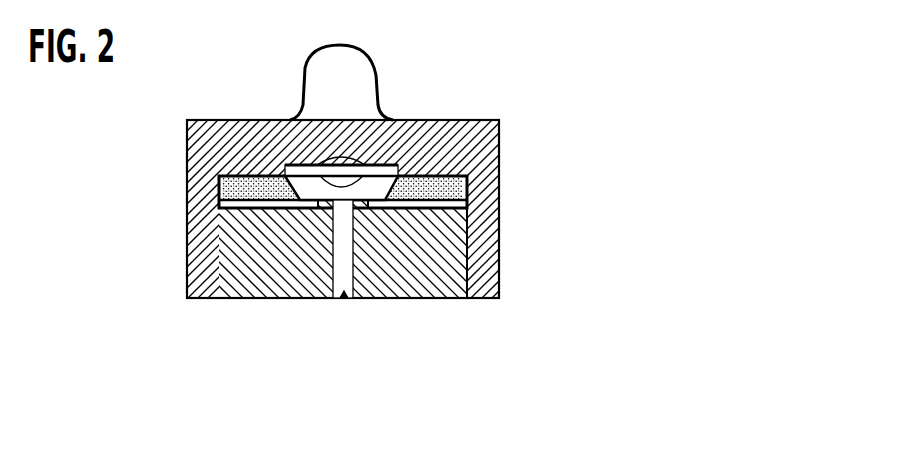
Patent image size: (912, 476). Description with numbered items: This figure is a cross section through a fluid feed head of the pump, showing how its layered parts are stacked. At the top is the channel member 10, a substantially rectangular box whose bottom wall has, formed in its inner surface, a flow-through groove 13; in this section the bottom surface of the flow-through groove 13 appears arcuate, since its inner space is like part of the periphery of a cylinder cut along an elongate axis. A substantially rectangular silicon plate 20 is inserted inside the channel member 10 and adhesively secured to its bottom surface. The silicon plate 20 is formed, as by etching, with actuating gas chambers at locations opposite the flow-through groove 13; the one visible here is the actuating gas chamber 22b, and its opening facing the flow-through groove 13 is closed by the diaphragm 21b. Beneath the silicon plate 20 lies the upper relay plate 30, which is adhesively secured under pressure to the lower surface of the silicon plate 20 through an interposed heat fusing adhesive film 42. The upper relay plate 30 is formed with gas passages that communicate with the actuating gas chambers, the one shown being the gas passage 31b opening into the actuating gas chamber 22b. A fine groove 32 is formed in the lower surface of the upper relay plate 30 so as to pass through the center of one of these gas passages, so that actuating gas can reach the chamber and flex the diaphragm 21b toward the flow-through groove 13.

The channel member 10 is at (215, 90).
The flow-through groove 13 is at (320, 163).
The silicon plate 20 is at (478, 180).
The diaphragm 21b is at (350, 160).
The actuating gas chamber 22b is at (348, 186).
The upper relay plate 30 is at (443, 283).
The gas passage 31b is at (343, 250).
The fine groove 32 is at (345, 298).
The heat fusing adhesive film 42 is at (277, 210).